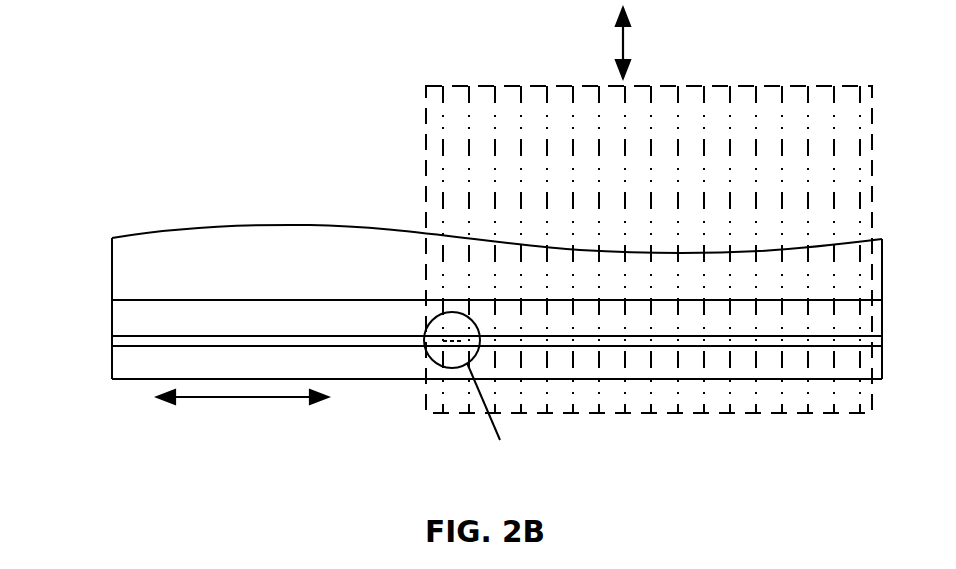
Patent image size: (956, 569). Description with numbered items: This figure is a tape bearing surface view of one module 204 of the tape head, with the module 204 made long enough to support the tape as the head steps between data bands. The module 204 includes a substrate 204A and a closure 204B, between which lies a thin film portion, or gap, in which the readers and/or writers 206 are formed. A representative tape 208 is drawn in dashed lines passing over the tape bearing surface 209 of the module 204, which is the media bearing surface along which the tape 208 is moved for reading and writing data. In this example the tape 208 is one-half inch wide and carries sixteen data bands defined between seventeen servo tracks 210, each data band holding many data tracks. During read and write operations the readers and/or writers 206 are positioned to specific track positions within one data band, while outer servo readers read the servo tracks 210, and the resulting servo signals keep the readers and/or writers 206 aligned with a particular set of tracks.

The module 204 is at (160, 218).
The substrate 204A is at (258, 226).
The closure 204B is at (112, 364).
The readers and/or writers 206 is at (424, 340).
The tape 208 is at (425, 92).
The tape bearing surface 209 is at (322, 322).
The servo tracks 210 is at (545, 178).